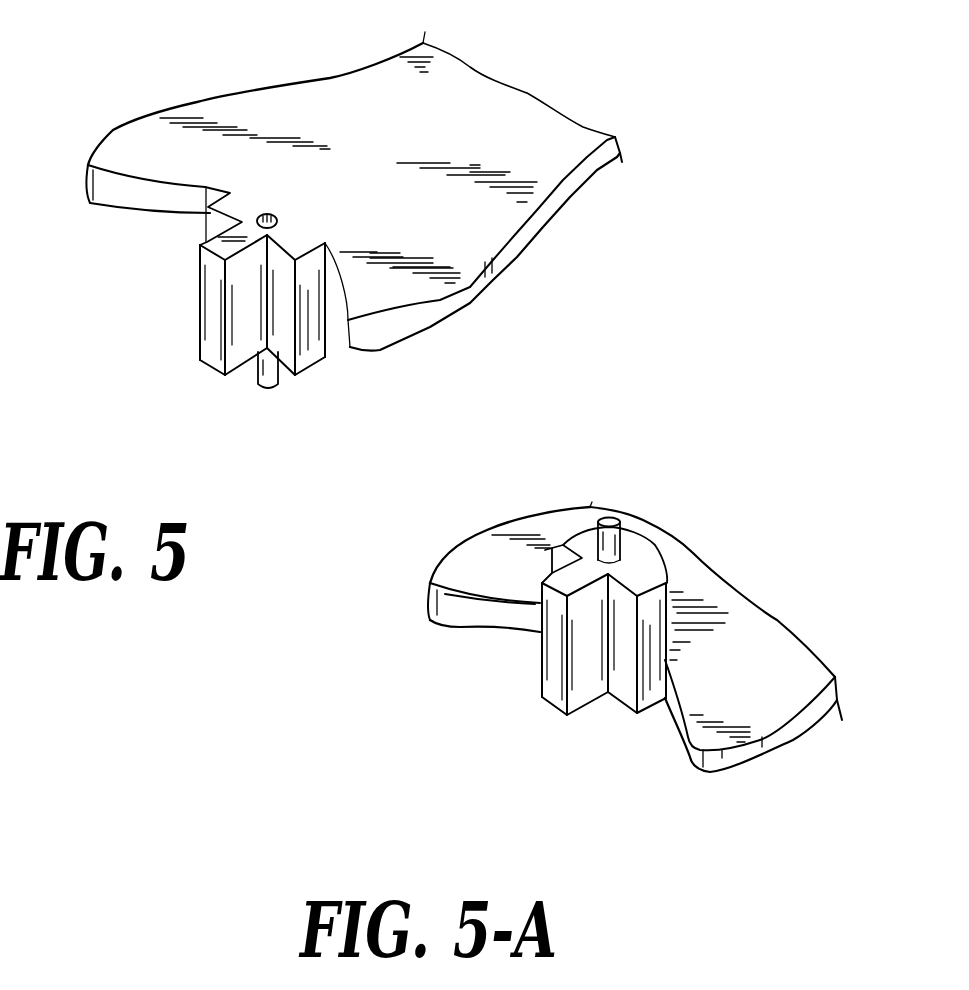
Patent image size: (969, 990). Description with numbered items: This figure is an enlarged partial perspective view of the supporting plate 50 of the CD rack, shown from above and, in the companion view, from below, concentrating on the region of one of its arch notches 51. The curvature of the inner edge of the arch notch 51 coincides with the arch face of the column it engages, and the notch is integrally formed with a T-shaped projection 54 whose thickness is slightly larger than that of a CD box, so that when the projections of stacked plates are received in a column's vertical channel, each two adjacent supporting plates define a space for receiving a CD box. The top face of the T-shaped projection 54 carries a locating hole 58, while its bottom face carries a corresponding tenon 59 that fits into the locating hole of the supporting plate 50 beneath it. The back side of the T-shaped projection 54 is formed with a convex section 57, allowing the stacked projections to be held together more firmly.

In FIG. 5, the supporting plate 50 is at (500, 225).
In FIG. 5-A, the supporting plate 50 is at (465, 581).
In FIG. 5, the arch notch 51 is at (153, 193).
In FIG. 5-A, the arch notch 51 is at (512, 620).
In FIG. 5, the T-shaped projection 54 is at (212, 323).
In FIG. 5-A, the T-shaped projection 54 is at (557, 700).
In FIG. 5-A, the convex section 57 is at (622, 538).
In FIG. 5, the locating hole 58 is at (262, 212).
In FIG. 5, the tenon 59 is at (277, 387).
In FIG. 5-A, the tenon 59 is at (620, 516).